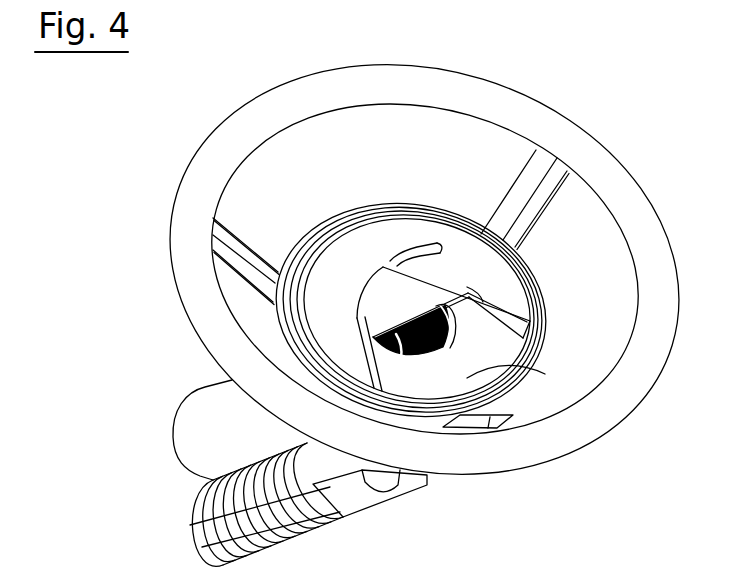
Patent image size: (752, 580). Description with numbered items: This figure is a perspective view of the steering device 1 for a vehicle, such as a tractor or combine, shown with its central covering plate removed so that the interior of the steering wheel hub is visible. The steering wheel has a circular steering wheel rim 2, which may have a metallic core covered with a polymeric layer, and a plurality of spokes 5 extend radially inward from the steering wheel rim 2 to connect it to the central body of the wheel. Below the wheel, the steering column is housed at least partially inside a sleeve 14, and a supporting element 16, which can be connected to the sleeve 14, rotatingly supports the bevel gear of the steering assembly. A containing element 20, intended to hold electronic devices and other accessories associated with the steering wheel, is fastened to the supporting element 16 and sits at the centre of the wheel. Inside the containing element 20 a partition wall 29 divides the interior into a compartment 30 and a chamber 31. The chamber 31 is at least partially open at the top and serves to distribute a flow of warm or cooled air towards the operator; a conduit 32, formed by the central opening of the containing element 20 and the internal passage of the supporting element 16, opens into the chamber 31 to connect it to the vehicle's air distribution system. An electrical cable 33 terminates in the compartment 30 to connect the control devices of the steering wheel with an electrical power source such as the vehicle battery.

The steering device 1 is at (67, 271).
The steering wheel rim 2 is at (210, 309).
The spokes 5 is at (527, 188).
The sleeve 14 is at (203, 422).
The supporting element 16 is at (387, 483).
The containing element 20 is at (385, 237).
The partition wall 29 is at (482, 283).
The compartment 30 is at (332, 293).
The chamber 31 is at (545, 374).
The conduit 32 is at (458, 352).
The electrical cable 33 is at (418, 242).